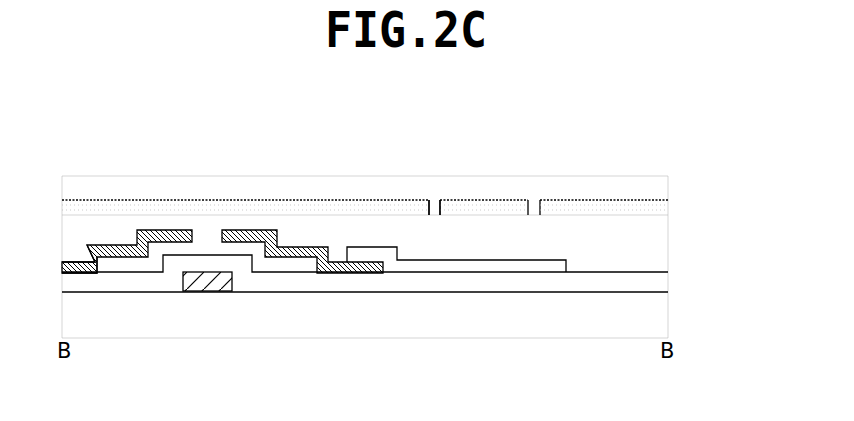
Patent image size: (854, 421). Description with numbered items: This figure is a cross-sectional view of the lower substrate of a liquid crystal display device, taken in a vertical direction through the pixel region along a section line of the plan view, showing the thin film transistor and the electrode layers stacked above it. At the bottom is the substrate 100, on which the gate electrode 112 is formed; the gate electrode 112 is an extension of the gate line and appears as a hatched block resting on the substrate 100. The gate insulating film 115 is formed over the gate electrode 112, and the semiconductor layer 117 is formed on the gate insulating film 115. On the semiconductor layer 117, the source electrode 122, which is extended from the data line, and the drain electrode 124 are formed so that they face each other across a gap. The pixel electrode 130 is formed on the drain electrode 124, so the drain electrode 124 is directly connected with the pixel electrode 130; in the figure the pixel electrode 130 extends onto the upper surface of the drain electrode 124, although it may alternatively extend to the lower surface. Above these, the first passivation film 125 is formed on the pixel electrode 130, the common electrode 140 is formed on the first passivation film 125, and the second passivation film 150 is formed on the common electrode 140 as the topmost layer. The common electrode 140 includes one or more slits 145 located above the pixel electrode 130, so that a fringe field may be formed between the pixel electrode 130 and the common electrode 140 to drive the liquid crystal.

The substrate 100 is at (663, 319).
The gate electrode 112 is at (208, 280).
The gate insulating film 115 is at (663, 283).
The semiconductor layer 117 is at (141, 263).
The source electrode 122 is at (90, 273).
The drain electrode 124 is at (337, 270).
The first passivation film 125 is at (663, 242).
The pixel electrode 130 is at (448, 264).
The common electrode 140 is at (663, 210).
The slit 145 is at (436, 192).
The second passivation film 150 is at (663, 188).